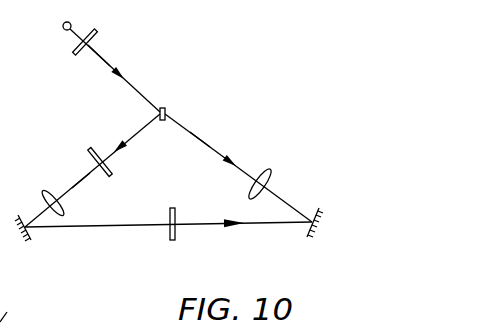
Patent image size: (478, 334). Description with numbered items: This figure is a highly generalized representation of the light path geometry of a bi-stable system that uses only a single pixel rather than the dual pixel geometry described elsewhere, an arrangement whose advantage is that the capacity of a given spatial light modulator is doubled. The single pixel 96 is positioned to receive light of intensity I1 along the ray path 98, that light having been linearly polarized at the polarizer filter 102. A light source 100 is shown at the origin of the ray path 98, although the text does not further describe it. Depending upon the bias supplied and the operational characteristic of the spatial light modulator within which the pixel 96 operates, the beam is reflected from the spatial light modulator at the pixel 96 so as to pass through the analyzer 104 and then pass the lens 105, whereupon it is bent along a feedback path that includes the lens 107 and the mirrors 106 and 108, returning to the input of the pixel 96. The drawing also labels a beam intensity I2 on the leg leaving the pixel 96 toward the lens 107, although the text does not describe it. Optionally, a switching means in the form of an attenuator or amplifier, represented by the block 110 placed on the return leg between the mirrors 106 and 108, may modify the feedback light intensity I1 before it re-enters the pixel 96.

The pixel 96 is at (164, 104).
The ray path 98 is at (97, 52).
The light source 100 is at (62, 26).
The polarizer filter 102 is at (80, 45).
The analyzer 104 is at (88, 152).
The lens 105 is at (64, 203).
The mirror 106 is at (30, 237).
The lens 107 is at (270, 172).
The mirror 108 is at (316, 226).
The block 110 is at (175, 239).
The light intensity I1 is at (77, 182).
The second beam path I2 is at (195, 131).